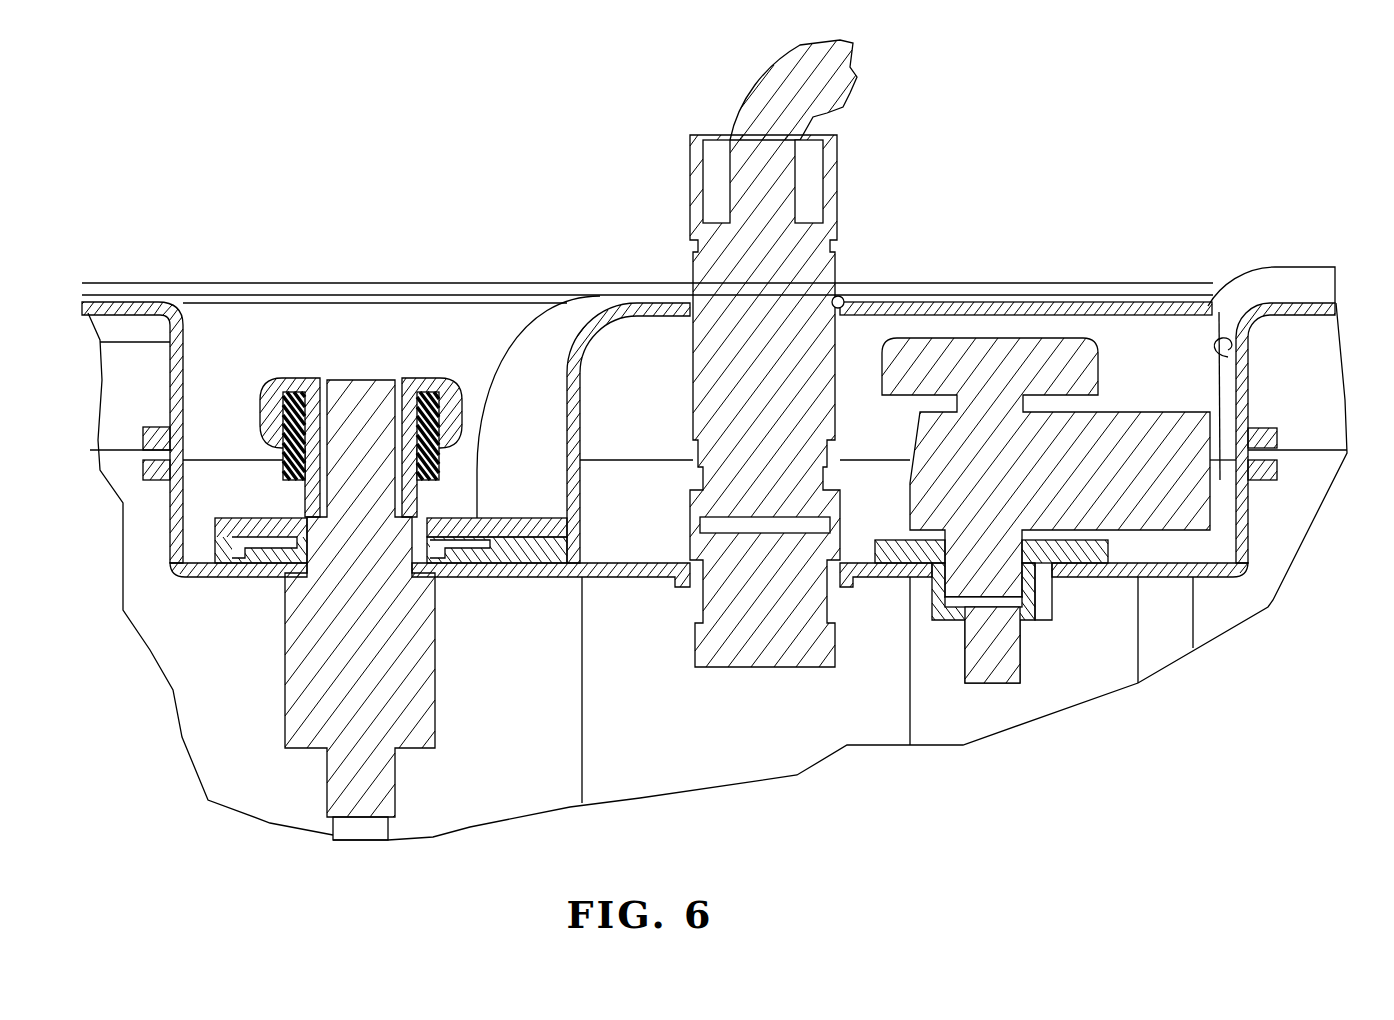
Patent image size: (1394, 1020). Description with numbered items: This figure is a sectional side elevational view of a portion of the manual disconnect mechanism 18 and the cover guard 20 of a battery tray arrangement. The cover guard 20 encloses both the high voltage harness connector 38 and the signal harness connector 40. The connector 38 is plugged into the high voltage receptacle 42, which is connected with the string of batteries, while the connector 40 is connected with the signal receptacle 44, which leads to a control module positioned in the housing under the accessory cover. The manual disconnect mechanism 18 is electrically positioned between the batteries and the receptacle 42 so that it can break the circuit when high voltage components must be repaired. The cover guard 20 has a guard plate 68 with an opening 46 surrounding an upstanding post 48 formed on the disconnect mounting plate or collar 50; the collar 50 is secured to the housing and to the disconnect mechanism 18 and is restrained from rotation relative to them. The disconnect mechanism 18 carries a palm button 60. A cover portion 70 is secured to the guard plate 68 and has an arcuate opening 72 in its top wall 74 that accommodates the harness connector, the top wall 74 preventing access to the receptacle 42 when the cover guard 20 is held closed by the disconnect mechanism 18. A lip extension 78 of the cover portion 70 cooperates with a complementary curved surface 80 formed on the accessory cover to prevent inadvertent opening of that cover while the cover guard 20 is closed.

The manual disconnect mechanism 18 is at (357, 376).
The cover guard 20 is at (576, 336).
The high voltage harness connector 38 is at (1000, 338).
The signal harness connector 40 is at (838, 207).
The high voltage receptacle 42 is at (1007, 668).
The signal receptacle 44 is at (777, 672).
The opening 46 is at (420, 520).
The upstanding post 48 is at (298, 520).
The disconnect mounting plate or collar 50 is at (453, 575).
The palm button 60 is at (423, 378).
The guard plate 68 is at (528, 548).
The cover portion 70 is at (1108, 300).
The arcuate opening 72 is at (844, 302).
The top wall 74 is at (955, 307).
The lip extension 78 is at (1215, 307).
The complementary curved surface 80 is at (1228, 357).